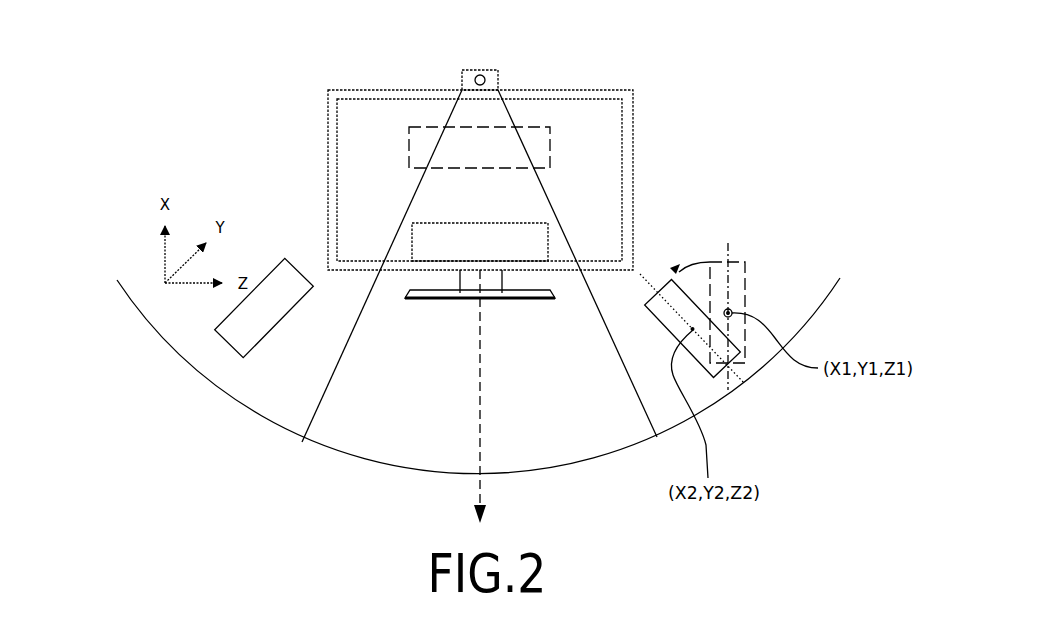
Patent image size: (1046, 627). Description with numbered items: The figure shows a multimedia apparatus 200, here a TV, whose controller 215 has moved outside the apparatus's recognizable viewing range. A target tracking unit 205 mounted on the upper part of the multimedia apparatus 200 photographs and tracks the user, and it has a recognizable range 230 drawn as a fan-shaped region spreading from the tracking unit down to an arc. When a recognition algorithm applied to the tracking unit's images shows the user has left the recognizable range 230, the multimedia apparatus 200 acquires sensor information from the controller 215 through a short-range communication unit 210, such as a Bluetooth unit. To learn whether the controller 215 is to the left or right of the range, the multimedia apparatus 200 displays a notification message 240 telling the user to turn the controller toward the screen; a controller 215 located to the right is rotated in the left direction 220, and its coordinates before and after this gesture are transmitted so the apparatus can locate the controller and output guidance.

The multimedia apparatus 200 is at (633, 158).
The target tracking unit 205 is at (481, 67).
The short-range communication unit 210 is at (481, 221).
The controller 215 is at (286, 258).
The left direction 220 is at (678, 272).
The recognizable range 230 is at (527, 470).
The notification message 240 is at (551, 147).